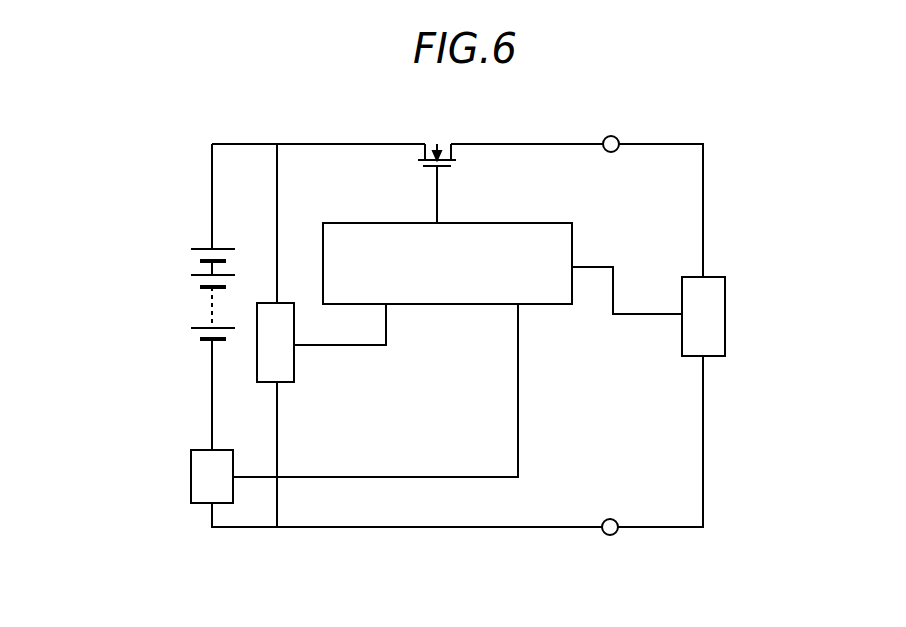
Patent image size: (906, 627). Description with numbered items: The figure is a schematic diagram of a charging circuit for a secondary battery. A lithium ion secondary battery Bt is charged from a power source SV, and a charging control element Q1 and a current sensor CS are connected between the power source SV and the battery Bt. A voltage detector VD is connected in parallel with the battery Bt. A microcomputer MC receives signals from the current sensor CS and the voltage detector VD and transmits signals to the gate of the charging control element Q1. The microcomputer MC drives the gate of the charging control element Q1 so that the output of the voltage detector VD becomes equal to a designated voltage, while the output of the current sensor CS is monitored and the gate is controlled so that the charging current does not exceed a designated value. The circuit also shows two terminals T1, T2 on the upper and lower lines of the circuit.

The charging control element Q1 is at (431, 143).
The terminal T1 is at (619, 139).
The lithium ion secondary battery Bt is at (196, 247).
The microcomputer MC is at (431, 305).
The voltage detector VD is at (296, 380).
The current sensor CS is at (190, 473).
The power source SV is at (727, 343).
The terminal T2 is at (604, 535).